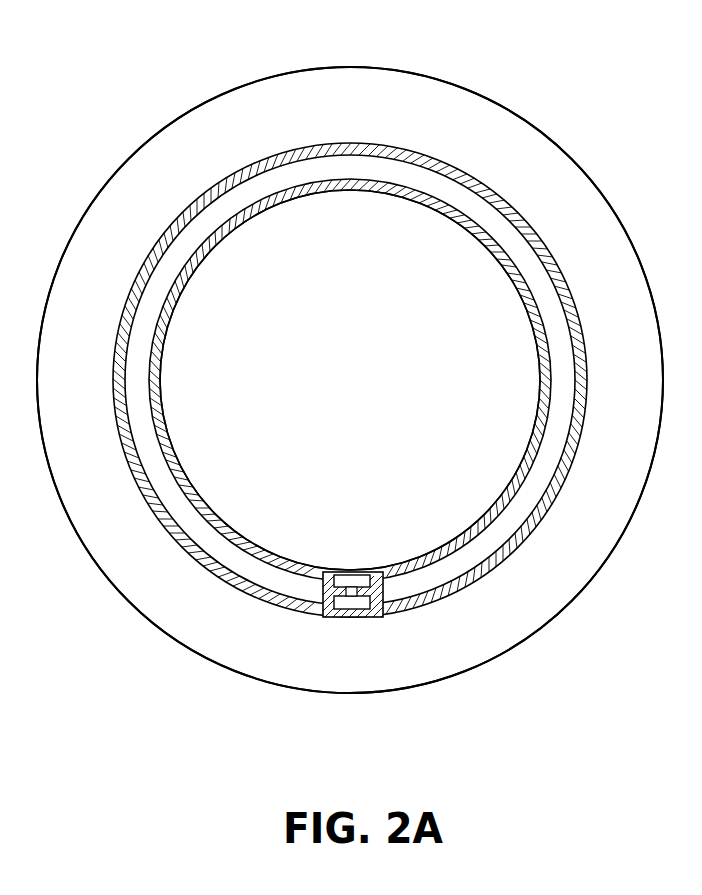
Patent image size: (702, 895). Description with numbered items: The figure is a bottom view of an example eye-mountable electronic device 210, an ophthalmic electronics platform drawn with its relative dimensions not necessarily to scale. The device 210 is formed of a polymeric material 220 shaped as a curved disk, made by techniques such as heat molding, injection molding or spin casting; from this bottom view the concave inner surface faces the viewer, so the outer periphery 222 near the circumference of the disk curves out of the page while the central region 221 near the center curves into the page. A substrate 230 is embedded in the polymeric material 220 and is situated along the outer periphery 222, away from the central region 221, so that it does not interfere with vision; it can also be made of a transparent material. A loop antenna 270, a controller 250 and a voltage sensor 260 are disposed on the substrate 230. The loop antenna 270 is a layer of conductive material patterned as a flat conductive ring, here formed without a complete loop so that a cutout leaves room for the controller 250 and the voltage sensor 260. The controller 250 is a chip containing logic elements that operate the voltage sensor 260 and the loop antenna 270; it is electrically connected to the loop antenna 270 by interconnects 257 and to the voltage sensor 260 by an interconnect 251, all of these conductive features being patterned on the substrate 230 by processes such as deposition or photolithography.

The eye-mountable electronic device 210 is at (348, 372).
The polymeric material 220 is at (80, 544).
The central region 221 is at (305, 340).
The outer periphery 222 is at (290, 103).
The substrate 230 is at (535, 527).
The loop antenna 270 is at (472, 562).
The controller 250 is at (340, 614).
The voltage sensor 260 is at (350, 580).
The interconnect 251 is at (365, 593).
The interconnects 257 is at (380, 598).